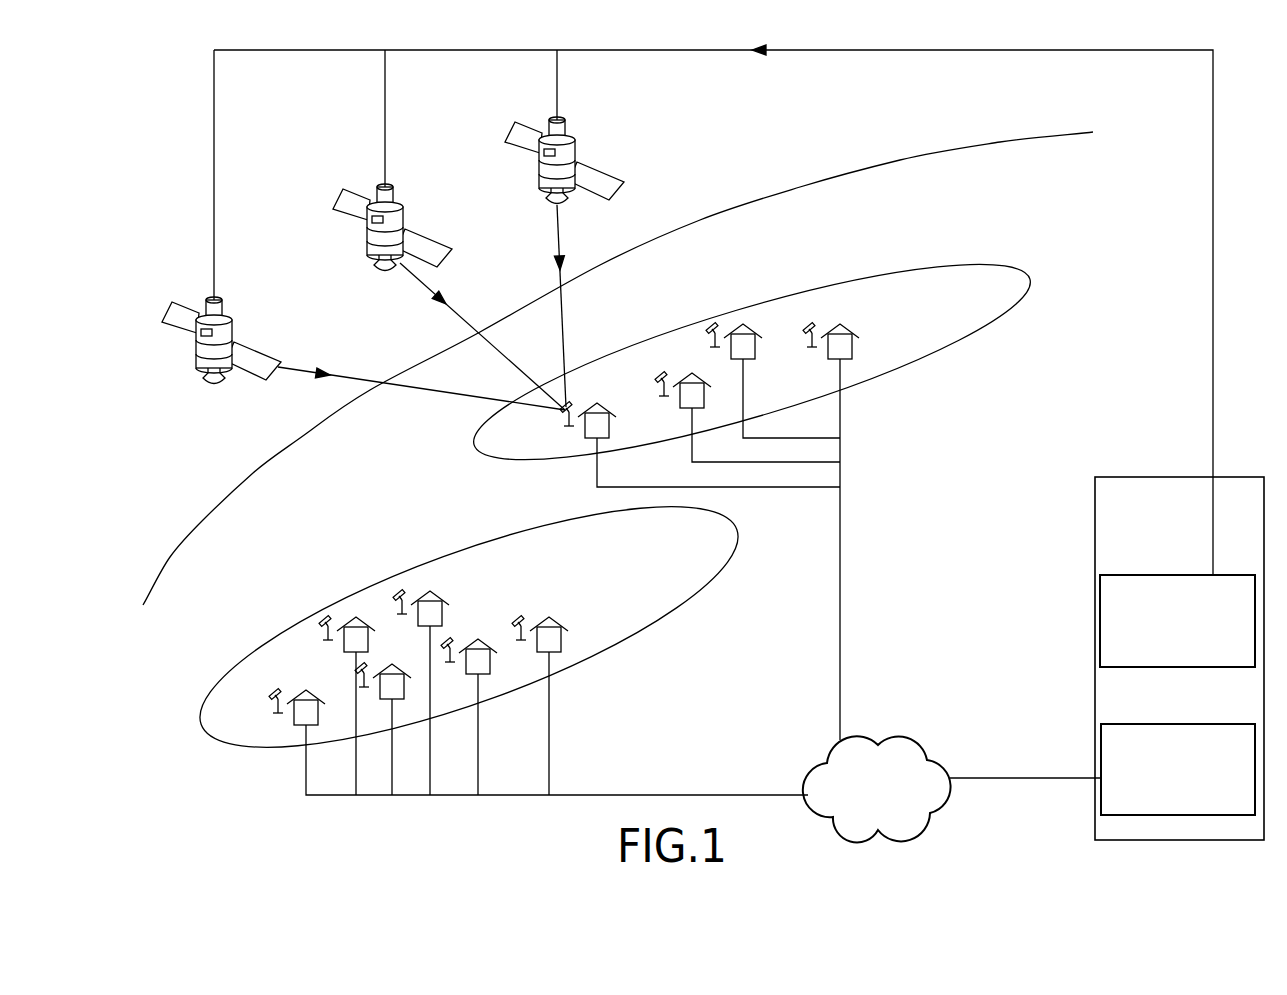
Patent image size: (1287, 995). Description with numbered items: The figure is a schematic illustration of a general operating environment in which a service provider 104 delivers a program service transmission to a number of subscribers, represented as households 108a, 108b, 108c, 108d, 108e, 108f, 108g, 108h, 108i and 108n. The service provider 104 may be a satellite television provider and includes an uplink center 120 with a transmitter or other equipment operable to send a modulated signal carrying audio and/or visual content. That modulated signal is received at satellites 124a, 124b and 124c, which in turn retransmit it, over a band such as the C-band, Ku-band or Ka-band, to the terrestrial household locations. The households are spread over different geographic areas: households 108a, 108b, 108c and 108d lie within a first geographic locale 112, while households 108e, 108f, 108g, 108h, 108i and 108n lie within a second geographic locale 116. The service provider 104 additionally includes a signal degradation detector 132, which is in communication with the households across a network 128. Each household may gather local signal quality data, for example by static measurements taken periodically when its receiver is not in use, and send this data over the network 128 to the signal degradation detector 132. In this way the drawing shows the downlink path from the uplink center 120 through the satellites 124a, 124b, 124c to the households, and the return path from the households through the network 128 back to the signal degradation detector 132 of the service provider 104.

The service provider 104 is at (1113, 477).
The household 108a is at (602, 403).
The household 108b is at (679, 375).
The household 108c is at (752, 330).
The household 108d is at (866, 322).
The household 108e is at (300, 690).
The household 108f is at (364, 624).
The household 108g is at (396, 670).
The household 108h is at (466, 583).
The household 108i is at (485, 647).
The household 108n is at (556, 620).
The first geographic locale 112 is at (943, 350).
The second geographic locale 116 is at (647, 628).
The uplink center 120 is at (1099, 605).
The satellite 124a is at (232, 309).
The satellite 124b is at (437, 185).
The satellite 124c is at (577, 132).
The network 128 is at (916, 735).
The signal degradation detector 132 is at (1099, 730).